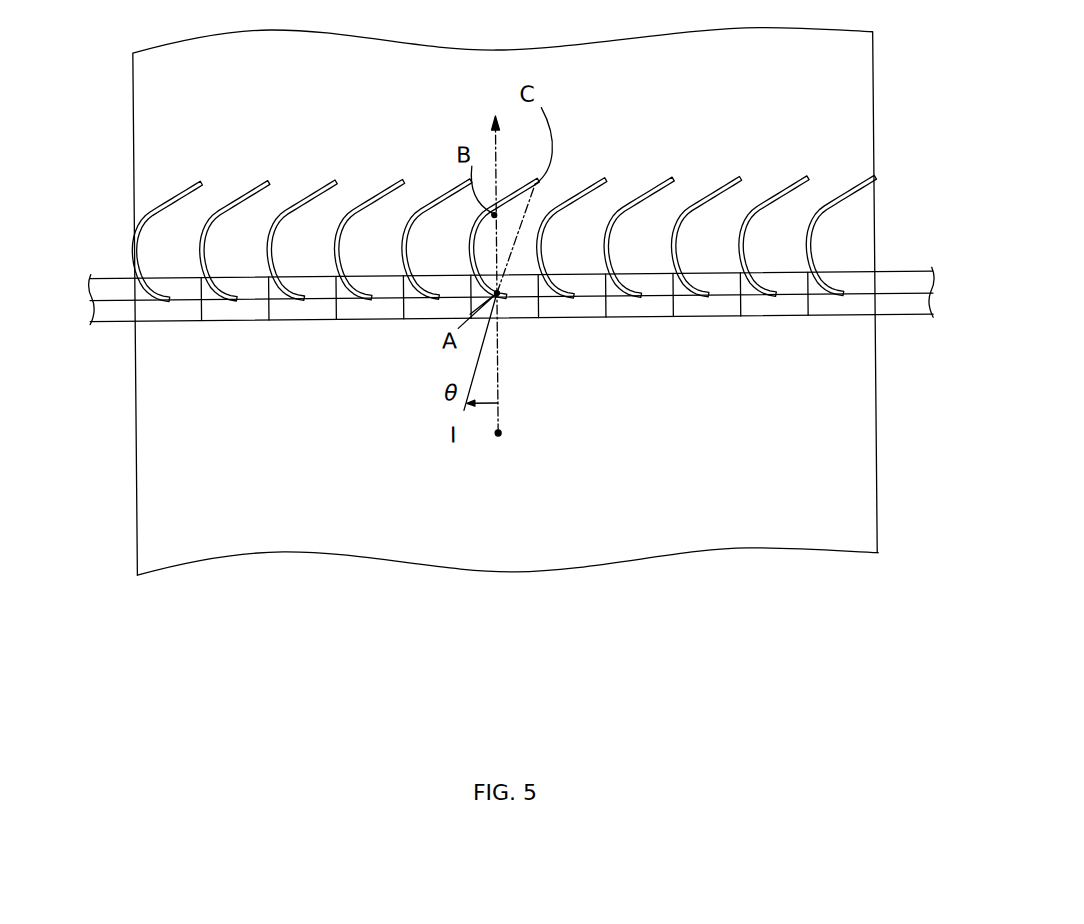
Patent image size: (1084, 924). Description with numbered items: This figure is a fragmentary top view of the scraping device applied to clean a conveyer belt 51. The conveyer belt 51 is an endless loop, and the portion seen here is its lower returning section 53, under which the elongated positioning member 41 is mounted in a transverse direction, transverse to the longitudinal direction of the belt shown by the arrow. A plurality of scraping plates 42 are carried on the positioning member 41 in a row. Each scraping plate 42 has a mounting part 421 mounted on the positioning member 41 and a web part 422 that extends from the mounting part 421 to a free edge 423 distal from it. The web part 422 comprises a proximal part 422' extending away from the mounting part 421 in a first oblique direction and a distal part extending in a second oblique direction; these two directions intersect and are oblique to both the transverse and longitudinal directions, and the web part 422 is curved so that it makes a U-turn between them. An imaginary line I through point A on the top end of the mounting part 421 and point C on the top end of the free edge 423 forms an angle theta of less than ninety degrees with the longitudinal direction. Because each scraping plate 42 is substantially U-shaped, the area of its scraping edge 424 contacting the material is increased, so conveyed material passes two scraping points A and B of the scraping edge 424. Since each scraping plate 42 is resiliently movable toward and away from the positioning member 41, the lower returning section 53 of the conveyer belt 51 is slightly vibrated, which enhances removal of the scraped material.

The elongated positioning member 41 is at (912, 283).
The scraping plate 42 is at (504, 248).
The mounting part 421 is at (578, 343).
The web part 422 is at (571, 202).
The proximal part 422' is at (300, 285).
The free edge 423 is at (636, 202).
The scraping edge 424 is at (837, 210).
The conveyer belt 51 is at (470, 329).
The lower returning section 53 is at (545, 558).